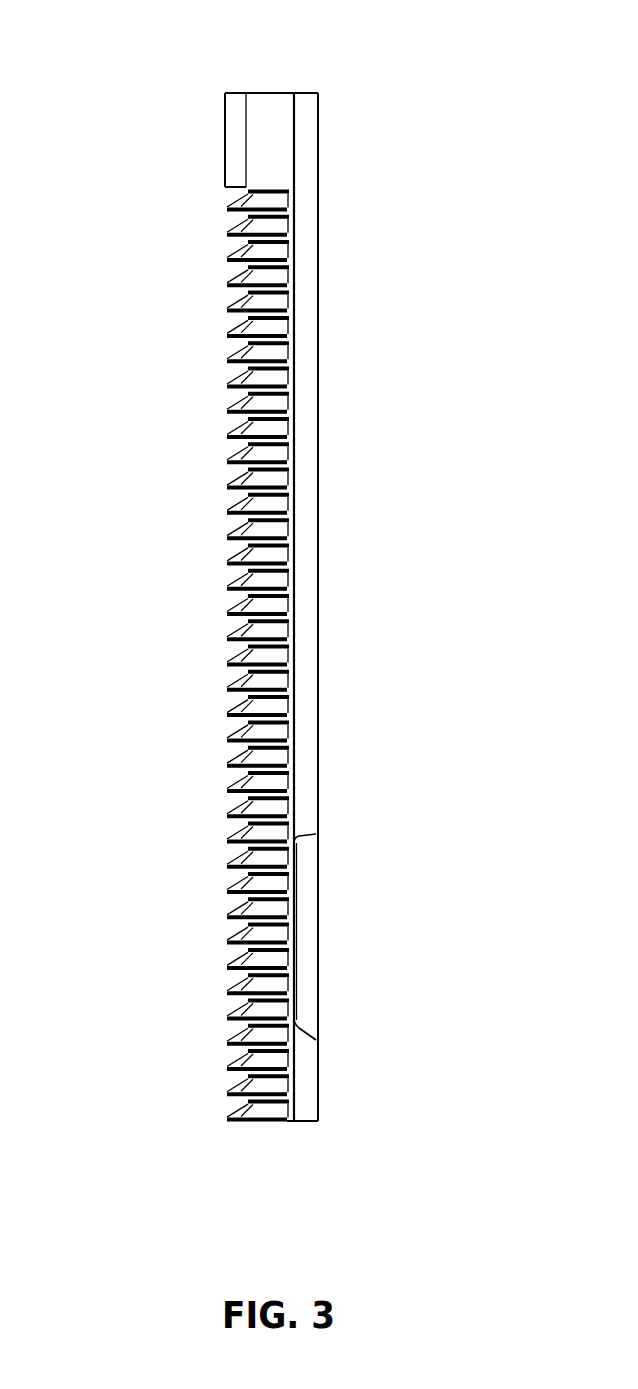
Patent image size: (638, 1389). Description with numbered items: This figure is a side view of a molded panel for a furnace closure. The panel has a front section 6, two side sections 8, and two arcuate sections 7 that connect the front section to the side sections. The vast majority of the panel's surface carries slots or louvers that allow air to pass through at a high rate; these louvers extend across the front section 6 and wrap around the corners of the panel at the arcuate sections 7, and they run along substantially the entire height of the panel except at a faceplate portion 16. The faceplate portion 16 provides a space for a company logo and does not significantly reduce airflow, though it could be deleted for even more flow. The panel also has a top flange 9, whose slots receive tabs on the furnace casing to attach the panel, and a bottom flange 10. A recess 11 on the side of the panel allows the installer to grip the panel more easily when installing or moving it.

The front section 6 is at (209, 643).
The arcuate sections 7 is at (321, 143).
The side sections 8 is at (342, 607).
The top flange 9 is at (271, 53).
The bottom flange 10 is at (279, 1154).
The recesses 11 is at (356, 937).
The faceplate portion 16 is at (186, 140).